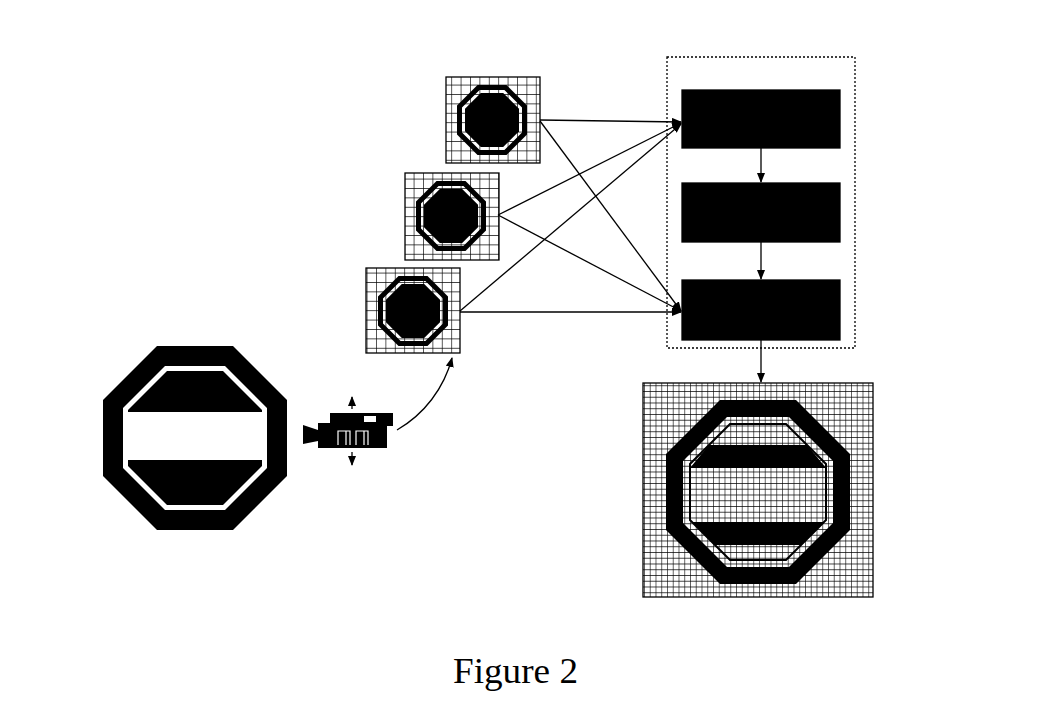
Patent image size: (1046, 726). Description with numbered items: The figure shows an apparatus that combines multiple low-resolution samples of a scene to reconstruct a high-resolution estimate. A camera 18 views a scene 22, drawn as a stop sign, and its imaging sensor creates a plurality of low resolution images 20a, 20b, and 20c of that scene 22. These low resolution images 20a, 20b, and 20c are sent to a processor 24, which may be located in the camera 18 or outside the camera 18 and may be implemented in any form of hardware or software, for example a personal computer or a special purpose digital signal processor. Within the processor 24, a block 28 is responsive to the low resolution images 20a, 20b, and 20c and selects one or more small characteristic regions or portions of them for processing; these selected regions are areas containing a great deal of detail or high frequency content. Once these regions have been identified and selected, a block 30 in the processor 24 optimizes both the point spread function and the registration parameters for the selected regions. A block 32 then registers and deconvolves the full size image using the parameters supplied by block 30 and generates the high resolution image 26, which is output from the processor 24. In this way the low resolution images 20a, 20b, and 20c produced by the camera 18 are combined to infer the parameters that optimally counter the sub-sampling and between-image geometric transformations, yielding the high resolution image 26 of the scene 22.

The camera 18 is at (377, 411).
The low resolution image 20a is at (375, 307).
The low resolution image 20b is at (413, 214).
The low resolution image 20c is at (455, 117).
The scene 22 is at (195, 425).
The processor 24 is at (792, 187).
The high resolution image 26 is at (786, 474).
The block 28 is at (799, 114).
The block 30 is at (799, 207).
The block 32 is at (799, 306).